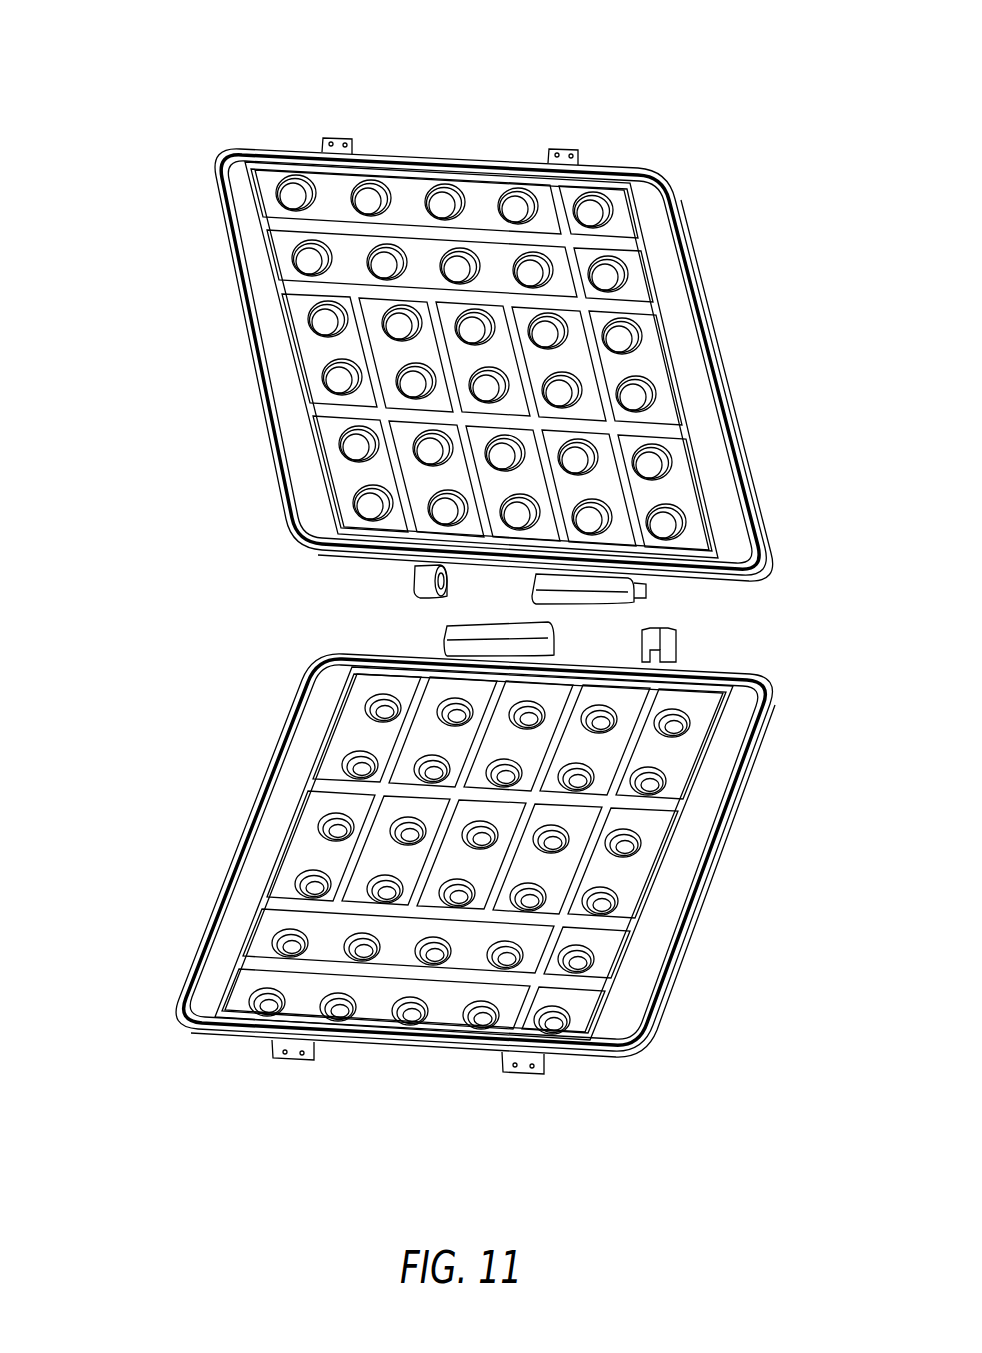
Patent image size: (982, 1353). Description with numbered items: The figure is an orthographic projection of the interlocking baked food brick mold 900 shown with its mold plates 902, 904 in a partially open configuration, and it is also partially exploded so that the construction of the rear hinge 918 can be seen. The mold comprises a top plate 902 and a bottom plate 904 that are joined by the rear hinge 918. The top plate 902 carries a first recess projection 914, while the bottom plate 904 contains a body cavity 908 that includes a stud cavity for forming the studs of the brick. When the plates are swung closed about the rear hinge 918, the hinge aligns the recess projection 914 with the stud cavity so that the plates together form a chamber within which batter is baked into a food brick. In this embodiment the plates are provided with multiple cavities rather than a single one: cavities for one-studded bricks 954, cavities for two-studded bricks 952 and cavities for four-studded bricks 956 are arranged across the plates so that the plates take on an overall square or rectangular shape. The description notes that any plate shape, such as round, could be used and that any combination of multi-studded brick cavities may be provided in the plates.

The interlocking baked food brick mold 900 is at (203, 94).
The top plate 902 is at (242, 313).
The bottom plate 904 is at (288, 707).
The body cavity 908 is at (320, 840).
The first recess projection 914 is at (582, 217).
The rear hinge 918 is at (408, 606).
The two-studded brick cavity 952 is at (633, 863).
The one-studded brick cavity 954 is at (592, 928).
The four-studded brick cavity 956 is at (265, 893).